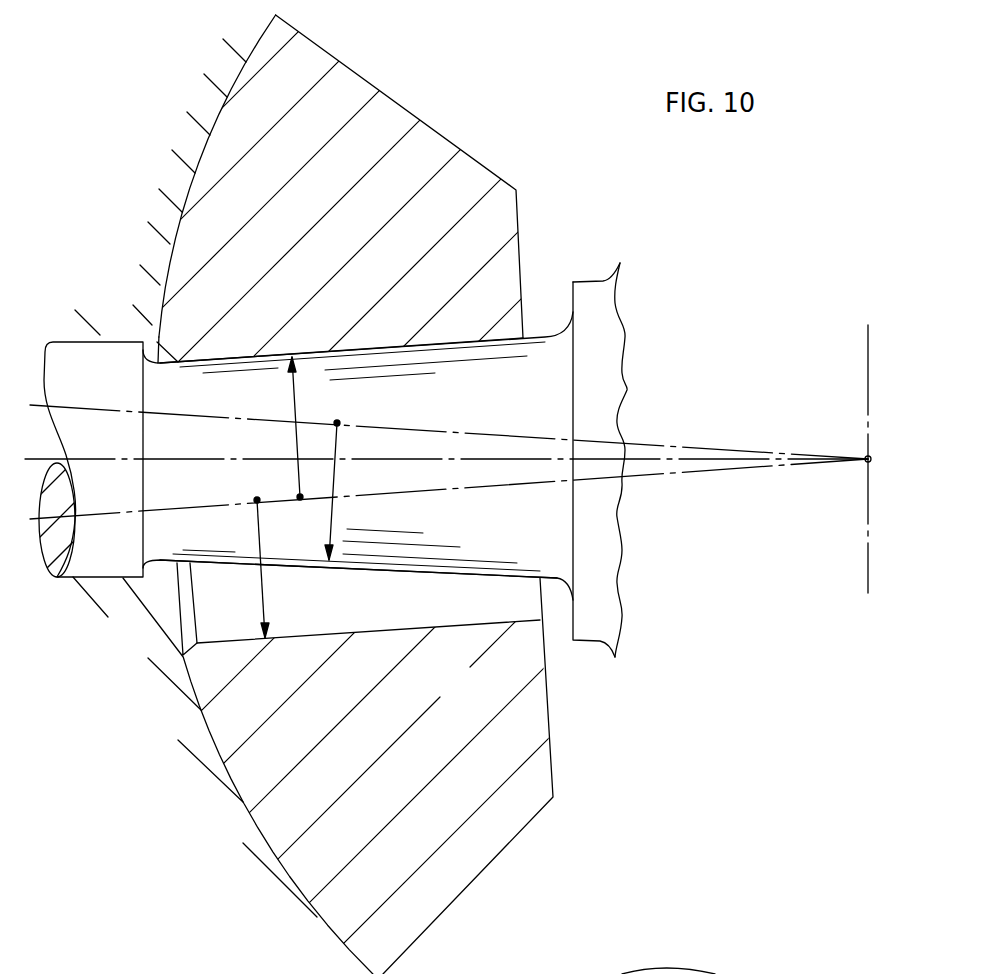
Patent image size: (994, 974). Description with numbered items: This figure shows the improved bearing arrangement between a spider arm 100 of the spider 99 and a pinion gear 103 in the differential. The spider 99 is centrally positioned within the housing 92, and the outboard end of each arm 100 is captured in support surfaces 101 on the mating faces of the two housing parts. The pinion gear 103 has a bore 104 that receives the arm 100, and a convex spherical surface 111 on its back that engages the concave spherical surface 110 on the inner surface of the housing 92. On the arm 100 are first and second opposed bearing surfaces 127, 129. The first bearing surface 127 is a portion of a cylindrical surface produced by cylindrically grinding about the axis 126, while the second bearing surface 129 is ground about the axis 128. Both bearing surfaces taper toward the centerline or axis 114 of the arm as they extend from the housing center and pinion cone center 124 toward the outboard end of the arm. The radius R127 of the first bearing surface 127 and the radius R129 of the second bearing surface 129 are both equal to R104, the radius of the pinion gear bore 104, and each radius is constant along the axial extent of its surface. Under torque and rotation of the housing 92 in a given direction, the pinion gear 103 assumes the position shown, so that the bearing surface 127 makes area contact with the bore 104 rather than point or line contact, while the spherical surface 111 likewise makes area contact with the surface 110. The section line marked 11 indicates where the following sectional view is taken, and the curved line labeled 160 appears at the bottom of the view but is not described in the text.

The housing 92 is at (230, 77).
The pinion gear 103 is at (426, 150).
The first bearing surface 127 is at (223, 359).
The support surfaces 101 is at (103, 342).
The spider arm 100 is at (485, 562).
The second bearing surface 129 is at (286, 562).
The spider 99 is at (607, 548).
The axis 128 is at (410, 422).
The axis 126 is at (543, 484).
The centerline or axis of the spider arm 114 is at (437, 461).
The housing center and pinion cone center 124 is at (866, 457).
The radius of bearing surface 127 R127 is at (293, 439).
The radius of bearing surface 129 R129 is at (338, 476).
The radius of the pinion gear bore R104 is at (263, 603).
The section line 11- 11 is at (373, 385).
The convex spherical surface 111 is at (213, 760).
The bore 104 is at (410, 631).
The concave spherical surface 110 is at (203, 721).
The roller 160 is at (665, 968).